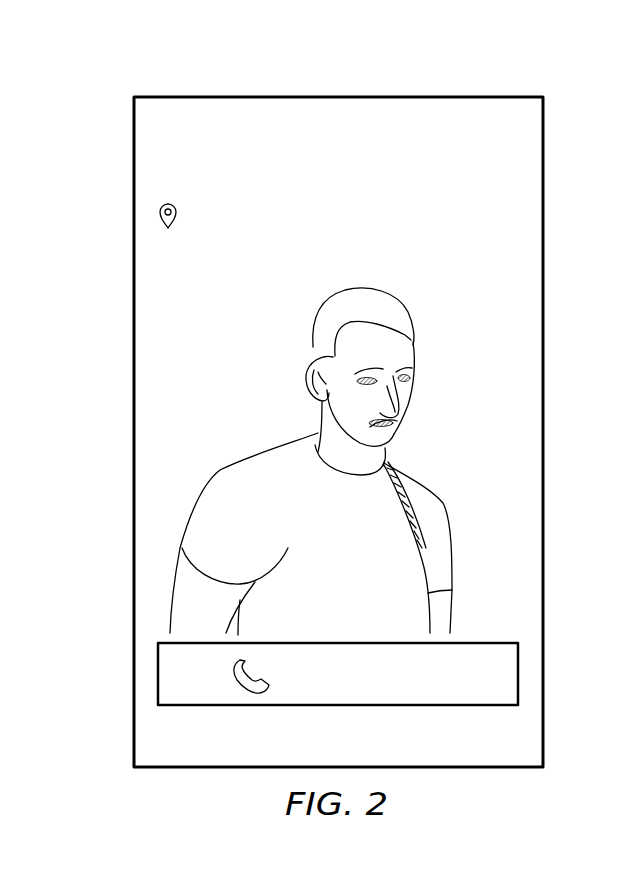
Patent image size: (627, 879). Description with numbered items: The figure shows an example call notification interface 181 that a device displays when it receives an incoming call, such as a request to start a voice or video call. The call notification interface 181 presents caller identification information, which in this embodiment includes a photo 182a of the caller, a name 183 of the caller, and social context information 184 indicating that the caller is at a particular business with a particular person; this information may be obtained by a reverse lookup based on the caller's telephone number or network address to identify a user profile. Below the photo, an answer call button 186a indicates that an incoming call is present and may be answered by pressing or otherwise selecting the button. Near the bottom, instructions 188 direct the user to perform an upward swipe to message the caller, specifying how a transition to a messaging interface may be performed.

The call notification interface 181 is at (290, 92).
The photo of the caller 182a is at (146, 372).
The name of the caller 183 is at (204, 168).
The social context information 184 is at (208, 232).
The answer call button 186a is at (481, 642).
The instructions 188 is at (467, 737).